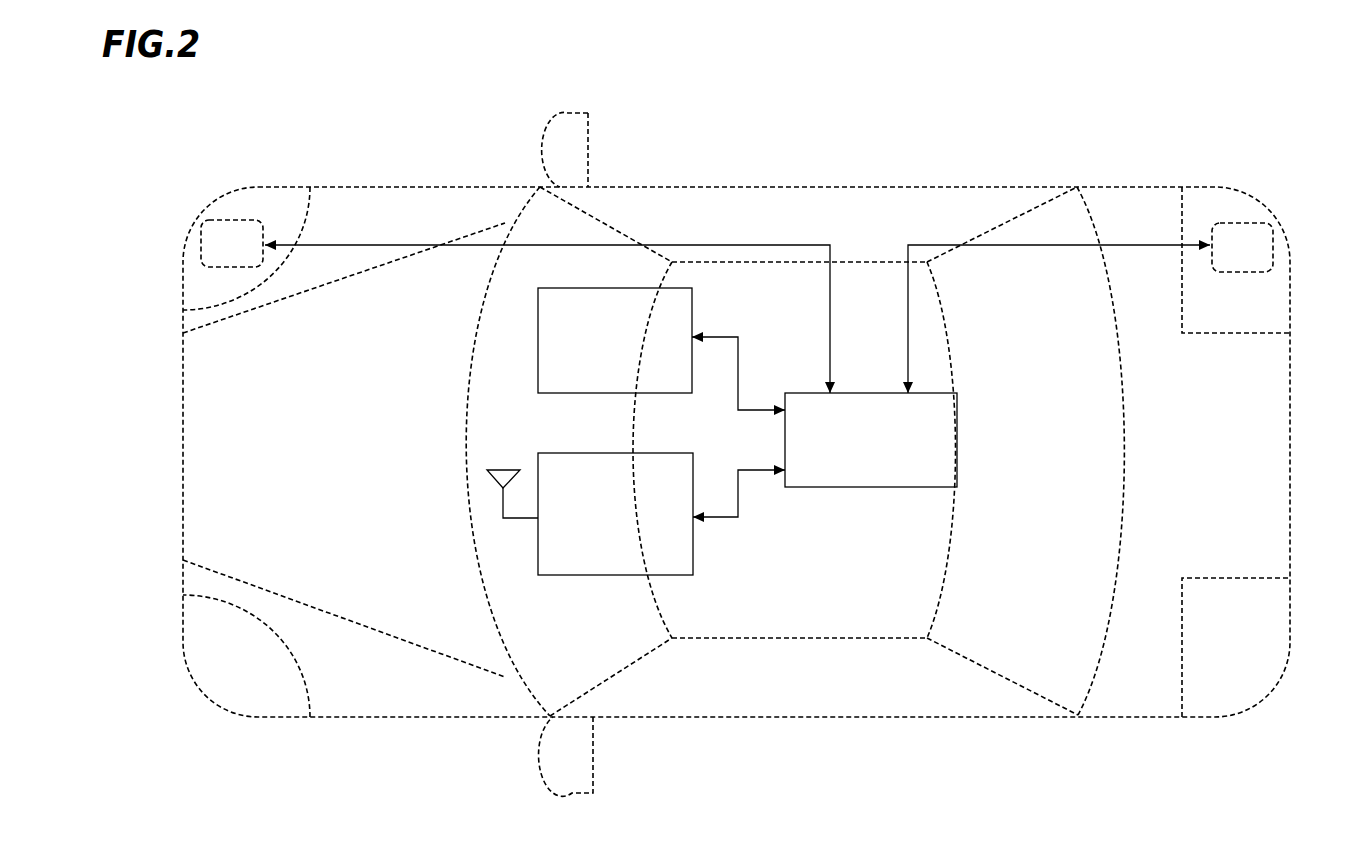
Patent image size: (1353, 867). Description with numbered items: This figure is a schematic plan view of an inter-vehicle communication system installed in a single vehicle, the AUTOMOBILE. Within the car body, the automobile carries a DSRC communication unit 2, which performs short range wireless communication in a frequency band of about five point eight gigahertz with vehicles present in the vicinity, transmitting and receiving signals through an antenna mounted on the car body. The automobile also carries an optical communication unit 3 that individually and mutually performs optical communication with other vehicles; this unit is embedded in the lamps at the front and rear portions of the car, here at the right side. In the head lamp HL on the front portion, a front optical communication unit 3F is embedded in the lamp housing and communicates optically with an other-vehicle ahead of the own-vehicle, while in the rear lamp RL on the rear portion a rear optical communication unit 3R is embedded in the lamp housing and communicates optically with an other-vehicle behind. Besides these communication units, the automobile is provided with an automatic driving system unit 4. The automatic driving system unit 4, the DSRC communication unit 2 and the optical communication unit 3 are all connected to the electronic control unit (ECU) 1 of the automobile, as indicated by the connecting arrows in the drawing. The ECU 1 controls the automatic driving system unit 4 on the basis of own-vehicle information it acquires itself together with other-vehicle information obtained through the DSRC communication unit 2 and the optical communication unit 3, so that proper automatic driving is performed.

The electronic control unit (ECU) 1 is at (862, 488).
The DSRC communication unit 2 is at (610, 577).
The optical communication unit 3 is at (721, 204).
The front optical communication unit 3F is at (228, 220).
The rear optical communication unit 3R is at (1245, 223).
The automatic driving system unit 4 is at (538, 350).
The head lamp HL is at (255, 283).
The rear lamp RL is at (1230, 335).
The automobile AUTOMOBILE is at (718, 187).